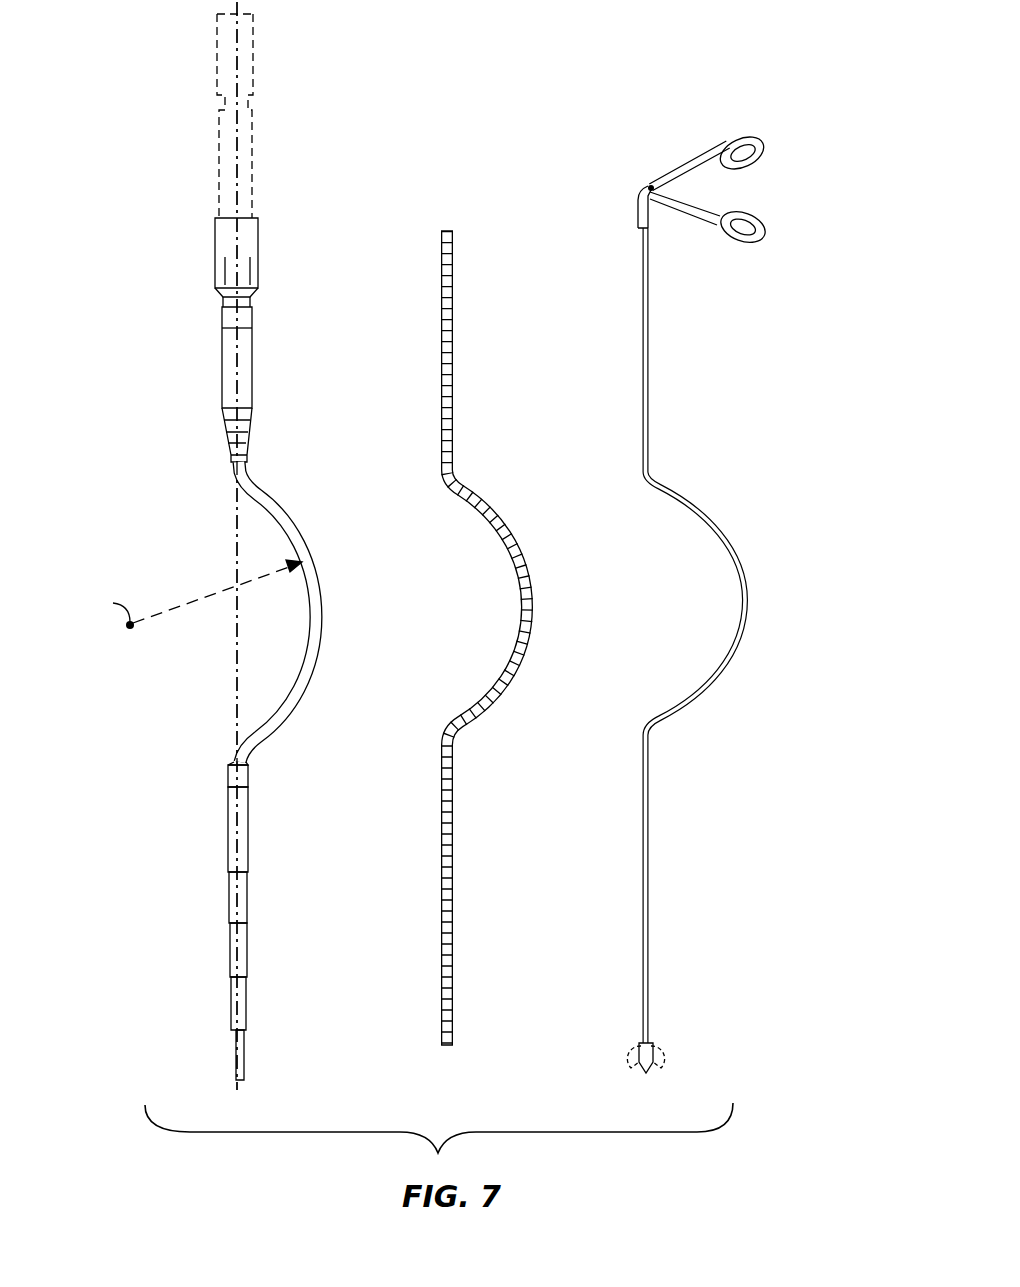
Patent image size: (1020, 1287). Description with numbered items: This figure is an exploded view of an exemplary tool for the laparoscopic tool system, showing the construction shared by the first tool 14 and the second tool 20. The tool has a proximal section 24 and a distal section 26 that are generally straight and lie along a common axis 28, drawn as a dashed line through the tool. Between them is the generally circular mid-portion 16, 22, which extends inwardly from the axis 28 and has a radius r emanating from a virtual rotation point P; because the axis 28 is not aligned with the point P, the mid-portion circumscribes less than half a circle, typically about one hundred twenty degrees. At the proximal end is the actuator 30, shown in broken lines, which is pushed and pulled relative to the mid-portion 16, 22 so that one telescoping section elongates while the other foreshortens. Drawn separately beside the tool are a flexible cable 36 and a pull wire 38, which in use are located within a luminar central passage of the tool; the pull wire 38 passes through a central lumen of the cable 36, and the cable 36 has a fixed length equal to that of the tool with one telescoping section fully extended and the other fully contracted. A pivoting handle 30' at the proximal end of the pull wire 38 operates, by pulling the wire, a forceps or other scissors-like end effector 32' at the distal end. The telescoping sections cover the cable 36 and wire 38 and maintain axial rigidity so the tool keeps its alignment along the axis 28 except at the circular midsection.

The first tool 14 is at (287, 546).
The second tool 20 is at (287, 546).
The mid-portion 16 is at (331, 546).
The mid-portion 22 is at (318, 596).
The proximal section 24 is at (257, 307).
The distal section 26 is at (218, 790).
The axis 28 is at (238, 503).
The actuator 30 is at (278, 116).
The pivoting handle 30' is at (694, 185).
The end effector 32' is at (674, 1047).
The flexible cable 36 is at (454, 422).
The pull wire 38 is at (694, 598).
The virtual rotation point P is at (113, 609).
The radius r is at (217, 591).